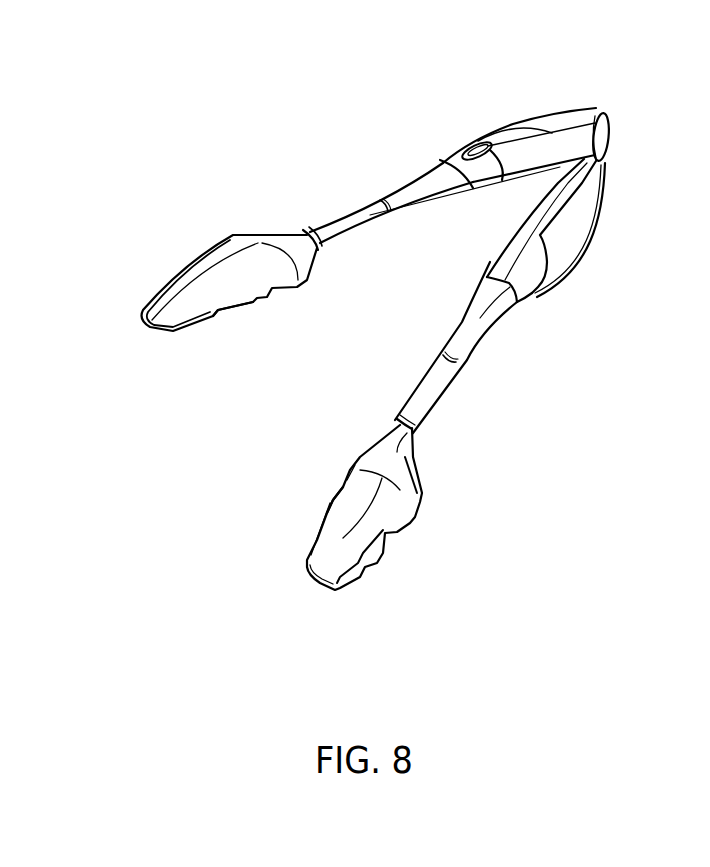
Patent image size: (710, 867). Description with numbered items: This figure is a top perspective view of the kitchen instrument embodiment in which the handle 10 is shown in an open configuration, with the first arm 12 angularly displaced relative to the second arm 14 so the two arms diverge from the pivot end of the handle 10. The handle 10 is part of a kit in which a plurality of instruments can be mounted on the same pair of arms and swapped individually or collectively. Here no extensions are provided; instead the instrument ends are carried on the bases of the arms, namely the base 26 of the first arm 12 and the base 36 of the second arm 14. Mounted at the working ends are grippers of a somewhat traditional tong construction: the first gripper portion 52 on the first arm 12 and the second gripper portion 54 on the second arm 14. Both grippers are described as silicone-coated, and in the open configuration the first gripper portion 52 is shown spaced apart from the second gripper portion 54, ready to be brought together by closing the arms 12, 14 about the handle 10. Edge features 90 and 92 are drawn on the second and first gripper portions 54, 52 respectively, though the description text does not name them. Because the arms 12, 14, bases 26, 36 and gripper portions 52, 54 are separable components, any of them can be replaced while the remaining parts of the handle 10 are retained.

The handle 10 is at (370, 339).
The first arm 12 is at (337, 250).
The second arm 14 is at (424, 392).
The base 26 is at (413, 192).
The base 36 is at (493, 313).
The first gripper portion 52 is at (138, 332).
The second gripper portion 54 is at (313, 588).
The second head edge 90 is at (320, 528).
The first head edge 92 is at (232, 315).